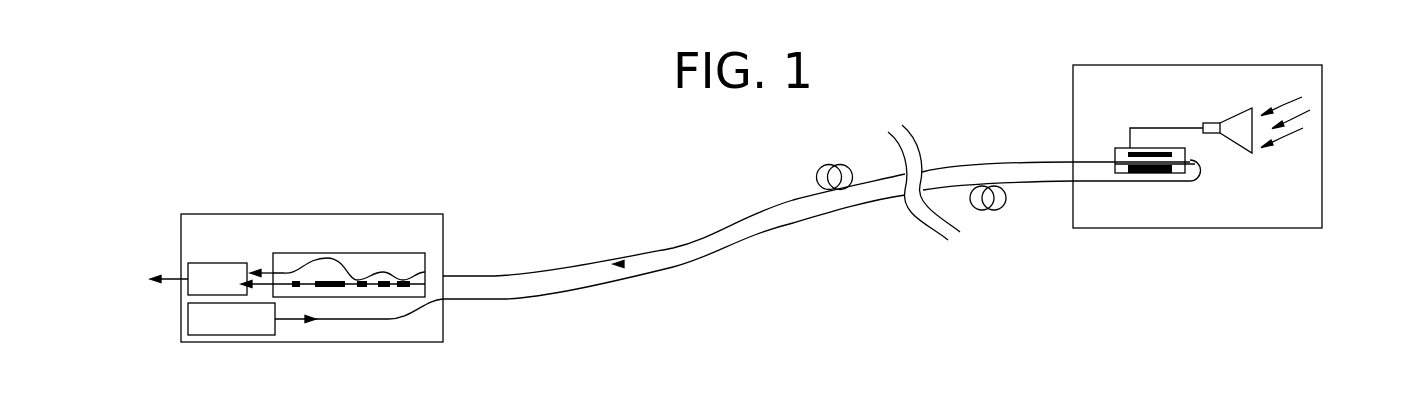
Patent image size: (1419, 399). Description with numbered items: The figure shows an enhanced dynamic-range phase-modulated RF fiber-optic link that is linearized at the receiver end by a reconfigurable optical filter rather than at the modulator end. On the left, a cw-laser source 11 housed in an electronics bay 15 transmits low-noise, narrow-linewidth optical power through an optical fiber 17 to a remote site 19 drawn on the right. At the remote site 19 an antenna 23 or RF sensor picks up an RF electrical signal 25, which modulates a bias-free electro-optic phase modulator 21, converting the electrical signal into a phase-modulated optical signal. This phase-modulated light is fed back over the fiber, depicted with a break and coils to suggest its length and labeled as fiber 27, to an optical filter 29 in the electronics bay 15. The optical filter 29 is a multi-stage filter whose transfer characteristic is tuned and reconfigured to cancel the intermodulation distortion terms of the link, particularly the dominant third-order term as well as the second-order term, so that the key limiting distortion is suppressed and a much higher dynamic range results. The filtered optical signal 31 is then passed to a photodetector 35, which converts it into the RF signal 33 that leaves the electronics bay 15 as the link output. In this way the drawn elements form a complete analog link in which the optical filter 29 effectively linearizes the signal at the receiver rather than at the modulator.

The cw-laser source 11 is at (210, 335).
The electronics bay 15 is at (443, 338).
The optical fiber 17 is at (562, 292).
The remote site 19 is at (1088, 65).
The bias-free phase modulator 21 is at (1115, 150).
The antenna 23 is at (1257, 152).
The RF electrical signal 25 is at (1302, 97).
The optical fiber 27 is at (704, 240).
The optical filter 29 is at (443, 252).
The filtered optical signal 31 is at (268, 273).
The RF signal 33 is at (170, 279).
The photodetector 35 is at (208, 263).